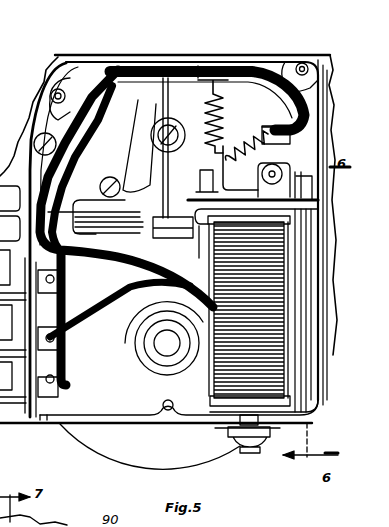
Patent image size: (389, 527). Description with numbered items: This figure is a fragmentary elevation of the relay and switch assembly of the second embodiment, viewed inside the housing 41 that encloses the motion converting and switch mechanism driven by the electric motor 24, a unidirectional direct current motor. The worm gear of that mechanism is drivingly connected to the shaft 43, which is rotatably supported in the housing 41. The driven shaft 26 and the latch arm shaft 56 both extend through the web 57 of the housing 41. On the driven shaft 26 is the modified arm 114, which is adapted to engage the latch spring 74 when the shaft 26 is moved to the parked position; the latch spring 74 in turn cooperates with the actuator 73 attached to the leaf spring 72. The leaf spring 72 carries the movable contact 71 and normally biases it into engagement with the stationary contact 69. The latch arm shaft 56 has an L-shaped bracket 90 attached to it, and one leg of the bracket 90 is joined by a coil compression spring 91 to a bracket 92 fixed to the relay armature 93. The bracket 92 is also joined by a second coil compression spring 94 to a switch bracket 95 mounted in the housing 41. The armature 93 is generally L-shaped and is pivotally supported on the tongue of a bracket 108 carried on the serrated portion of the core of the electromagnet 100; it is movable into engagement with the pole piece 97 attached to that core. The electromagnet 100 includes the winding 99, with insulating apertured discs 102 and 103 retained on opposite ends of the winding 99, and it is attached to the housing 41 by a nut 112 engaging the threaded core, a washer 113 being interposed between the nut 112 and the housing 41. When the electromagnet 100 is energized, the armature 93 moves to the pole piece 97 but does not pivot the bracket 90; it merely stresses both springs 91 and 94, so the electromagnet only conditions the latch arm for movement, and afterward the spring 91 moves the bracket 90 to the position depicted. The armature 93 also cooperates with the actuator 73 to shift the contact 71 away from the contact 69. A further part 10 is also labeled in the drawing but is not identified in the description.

The contact spring 10 is at (128, 232).
The electric motor 24 is at (80, 441).
The driven shaft 26 is at (158, 128).
The housing 41 is at (290, 58).
The shaft 43 is at (165, 347).
The latch arm shaft 56 is at (302, 188).
The web 57 is at (293, 82).
The stationary contact 69 is at (106, 198).
The movable contact 71 is at (120, 234).
The leaf spring 72 is at (150, 219).
The actuator 73 is at (164, 236).
The latch spring 74 is at (198, 185).
The L-shaped bracket 90 is at (288, 148).
The coil compression spring 91 is at (257, 142).
The bracket 92 is at (259, 180).
The relay armature 93 is at (198, 250).
The coil compression spring 94 is at (219, 100).
The switch bracket 95 is at (198, 66).
The pole piece 97 is at (246, 310).
The winding 99 is at (283, 348).
The electromagnet 100 is at (280, 278).
The insulating apertured disc 102 is at (288, 220).
The insulating apertured disc 103 is at (304, 402).
The bracket 108 is at (301, 298).
The nut 112 is at (228, 437).
The washer 113 is at (196, 432).
The modified arm 114 is at (145, 168).